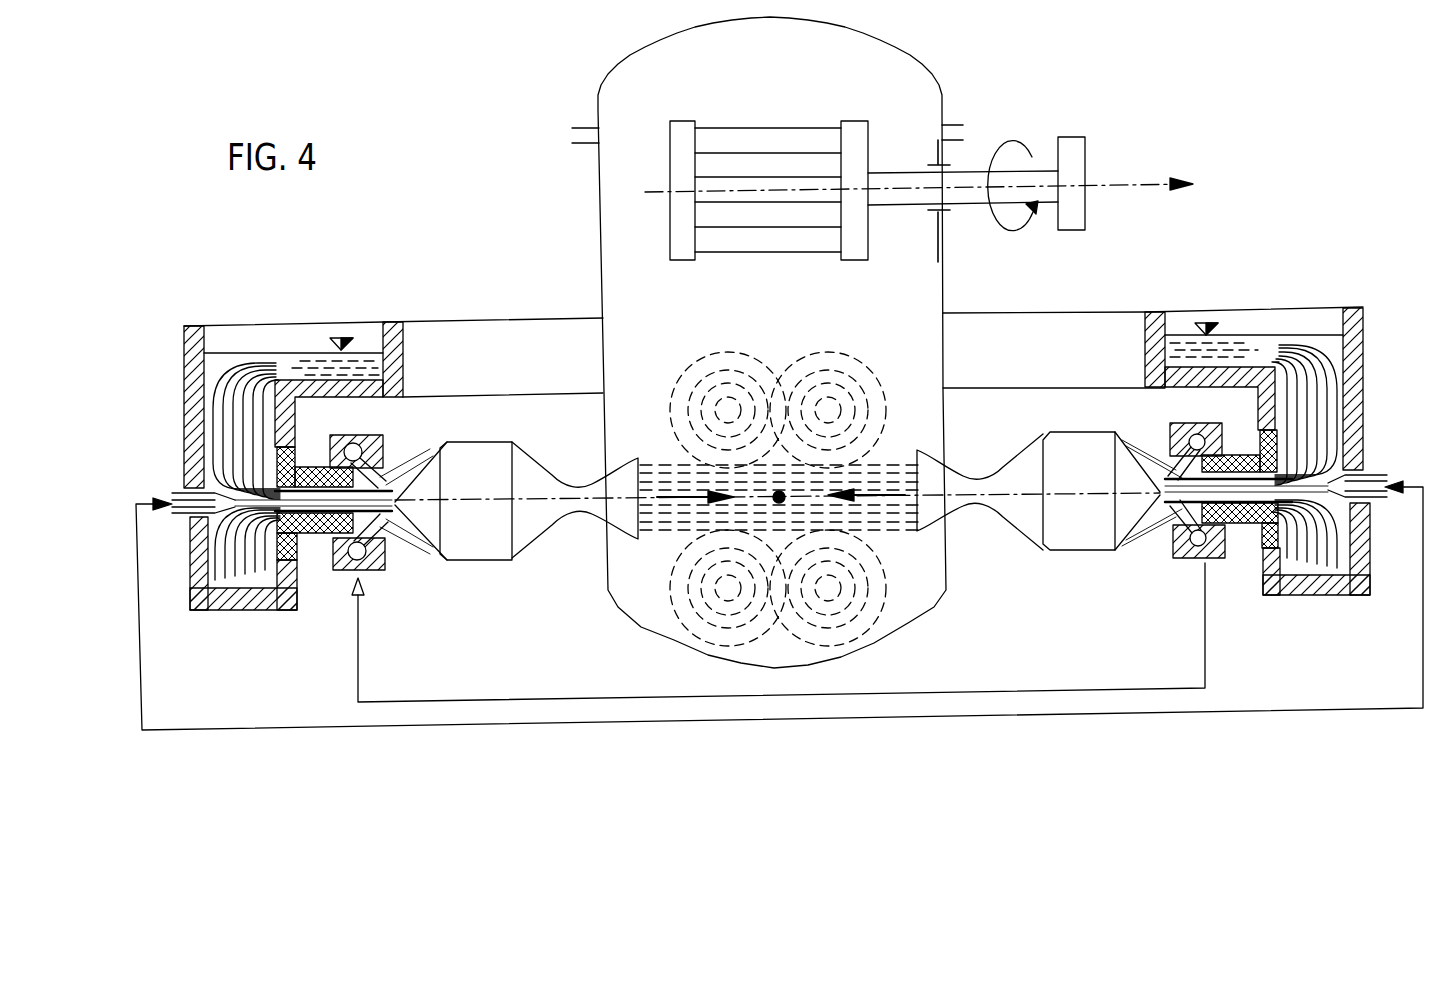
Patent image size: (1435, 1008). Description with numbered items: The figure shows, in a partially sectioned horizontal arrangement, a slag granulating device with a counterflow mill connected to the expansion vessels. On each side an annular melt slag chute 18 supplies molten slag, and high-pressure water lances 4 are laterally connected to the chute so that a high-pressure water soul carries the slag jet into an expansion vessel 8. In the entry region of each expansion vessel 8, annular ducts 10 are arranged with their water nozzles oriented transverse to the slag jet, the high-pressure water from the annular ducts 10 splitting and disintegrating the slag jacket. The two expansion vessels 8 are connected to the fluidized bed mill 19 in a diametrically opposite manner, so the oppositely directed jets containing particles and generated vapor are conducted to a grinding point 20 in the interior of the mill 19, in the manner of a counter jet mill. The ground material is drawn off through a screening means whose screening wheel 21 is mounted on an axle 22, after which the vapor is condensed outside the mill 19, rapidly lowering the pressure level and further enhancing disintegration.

The high-pressure water lance 4 is at (180, 513).
The expansion vessel 8 is at (462, 560).
The annular duct 10 is at (1195, 436).
The annular melt slag chute 18 is at (1352, 308).
The mill 19 is at (935, 90).
The grinding point 20 is at (785, 502).
The screening wheel 21 is at (723, 142).
The axle of the wheel 22 is at (1037, 180).